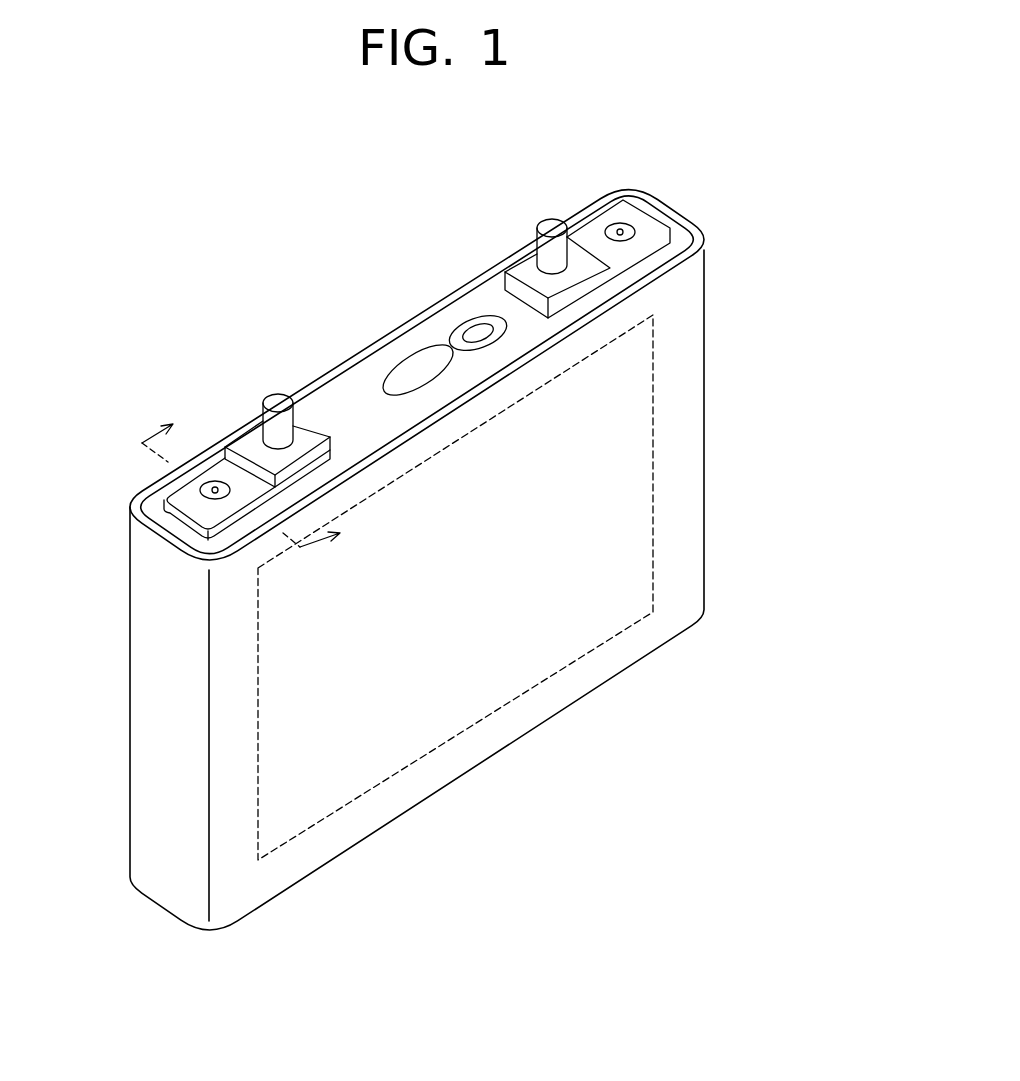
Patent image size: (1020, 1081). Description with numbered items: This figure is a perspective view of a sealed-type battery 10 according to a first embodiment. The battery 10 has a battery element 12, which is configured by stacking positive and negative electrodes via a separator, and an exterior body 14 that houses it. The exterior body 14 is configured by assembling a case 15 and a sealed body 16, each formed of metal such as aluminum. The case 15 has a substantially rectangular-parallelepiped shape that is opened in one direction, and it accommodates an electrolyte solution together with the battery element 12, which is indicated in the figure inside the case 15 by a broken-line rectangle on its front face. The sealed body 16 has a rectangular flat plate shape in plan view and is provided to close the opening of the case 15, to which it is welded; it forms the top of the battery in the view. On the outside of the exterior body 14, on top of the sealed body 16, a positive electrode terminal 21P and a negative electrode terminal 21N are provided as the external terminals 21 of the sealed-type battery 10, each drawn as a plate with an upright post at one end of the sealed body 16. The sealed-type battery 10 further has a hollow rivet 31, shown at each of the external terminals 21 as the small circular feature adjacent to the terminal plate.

The sealed-type battery 10 is at (98, 347).
The battery element 12 is at (333, 813).
The exterior body 14 is at (763, 205).
The case 15 is at (686, 354).
The sealed body 16 is at (683, 242).
The external terminals 21 is at (413, 369).
The positive electrode terminal 21P is at (248, 446).
The negative electrode terminal 21N is at (527, 270).
The hollow rivet 31 is at (203, 487).